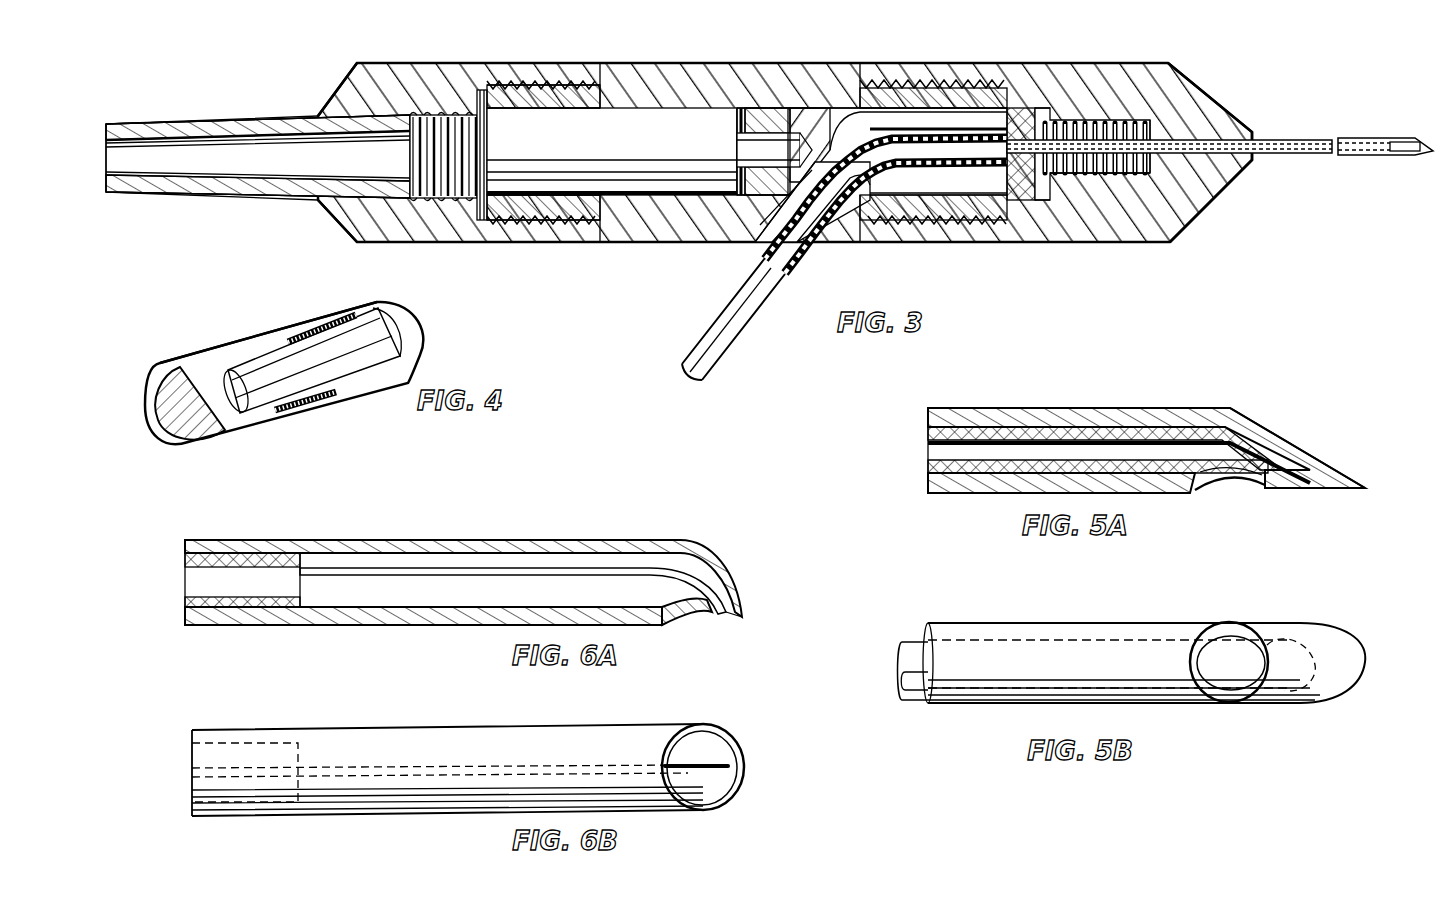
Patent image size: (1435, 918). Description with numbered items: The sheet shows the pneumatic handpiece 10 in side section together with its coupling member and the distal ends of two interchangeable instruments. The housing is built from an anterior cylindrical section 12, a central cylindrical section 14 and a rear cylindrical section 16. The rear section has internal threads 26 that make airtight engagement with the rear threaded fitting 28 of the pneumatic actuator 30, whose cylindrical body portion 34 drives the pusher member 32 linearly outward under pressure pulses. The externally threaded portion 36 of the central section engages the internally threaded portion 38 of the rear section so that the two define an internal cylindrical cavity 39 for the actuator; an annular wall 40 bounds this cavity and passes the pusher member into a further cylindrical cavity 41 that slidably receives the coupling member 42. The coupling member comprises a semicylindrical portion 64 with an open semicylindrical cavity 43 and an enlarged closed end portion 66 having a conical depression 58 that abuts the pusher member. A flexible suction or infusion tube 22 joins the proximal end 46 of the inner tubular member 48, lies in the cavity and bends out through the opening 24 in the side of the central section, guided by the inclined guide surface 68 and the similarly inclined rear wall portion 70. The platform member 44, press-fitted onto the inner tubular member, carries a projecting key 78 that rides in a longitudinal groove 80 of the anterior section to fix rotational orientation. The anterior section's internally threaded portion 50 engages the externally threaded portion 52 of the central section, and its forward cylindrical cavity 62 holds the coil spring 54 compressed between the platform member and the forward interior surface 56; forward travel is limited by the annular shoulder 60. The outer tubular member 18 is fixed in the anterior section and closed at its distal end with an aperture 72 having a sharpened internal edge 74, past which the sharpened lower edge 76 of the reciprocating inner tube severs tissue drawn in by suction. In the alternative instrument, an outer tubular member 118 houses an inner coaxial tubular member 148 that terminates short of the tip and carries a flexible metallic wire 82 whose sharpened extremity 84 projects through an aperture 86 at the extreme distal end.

In FIG. 3, the pneumatic handpiece 10 is at (316, 232).
In FIG. 3, the anterior cylindrical section 12 is at (1210, 192).
In FIG. 3, the central cylindrical section 14 is at (652, 222).
In FIG. 3, the rear cylindrical section 16 is at (340, 80).
In FIG. 3, the outer tubular member 18 is at (1385, 156).
In FIG. 5A, the outer tubular member 18 is at (1110, 412).
In FIG. 5B, the outer tubular member 18 is at (1000, 708).
In FIG. 3, the flexible suction or infusion tube 22 is at (735, 322).
In FIG. 3, the opening 24 is at (810, 258).
In FIG. 3, the internal threads 26 is at (418, 108).
In FIG. 3, the rear threaded fitting 28 is at (455, 113).
In FIG. 3, the pneumatic actuator 30 is at (597, 186).
In FIG. 3, the pusher member 32 is at (745, 152).
In FIG. 3, the cylindrical body portion 34 is at (626, 139).
In FIG. 3, the externally threaded portion 36 is at (555, 85).
In FIG. 3, the internally threaded portion 38 is at (516, 84).
In FIG. 3, the internal cylindrical cavity 39 is at (742, 108).
In FIG. 3, the annular wall 40 is at (772, 108).
In FIG. 3, the cylindrical cavity 41 is at (790, 108).
In FIG. 3, the coupling member 42 is at (960, 98).
In FIG. 4, the coupling member 42 is at (310, 411).
In FIG. 3, the open semicylindrical cavity 43 is at (862, 108).
In FIG. 4, the open semicylindrical cavity 43 is at (370, 357).
In FIG. 3, the platform member 44 is at (1025, 108).
In FIG. 3, the proximal end 46 is at (960, 200).
In FIG. 3, the inner tubular member 48 is at (1356, 138).
In FIG. 5A, the inner tubular member 48 is at (990, 432).
In FIG. 5B, the inner tubular member 48 is at (916, 692).
In FIG. 3, the internally threaded portion 50 is at (928, 84).
In FIG. 3, the externally threaded portion 52 is at (918, 224).
In FIG. 3, the coil spring 54 is at (1120, 135).
In FIG. 3, the forward interior surface 56 is at (1150, 130).
In FIG. 3, the conical depression 58 is at (812, 118).
In FIG. 3, the annular shoulder 60 is at (1058, 112).
In FIG. 3, the forward cylindrical cavity 62 is at (1120, 178).
In FIG. 4, the semicylindrical portion 64 is at (313, 320).
In FIG. 3, the closed end portion 66 is at (790, 198).
In FIG. 4, the closed end portion 66 is at (172, 438).
In FIG. 3, the inclined guide surface 68 is at (832, 235).
In FIG. 4, the inclined guide surface 68 is at (205, 425).
In FIG. 3, the rear wall portion 70 is at (758, 245).
In FIG. 5A, the aperture 72 is at (1242, 487).
In FIG. 5B, the aperture 72 is at (1226, 672).
In FIG. 5A, the sharpened internal edge 74 is at (1216, 473).
In FIG. 5B, the sharpened internal edge 74 is at (1250, 680).
In FIG. 5A, the sharpened lower edge 76 is at (1290, 462).
In FIG. 5B, the sharpened lower edge 76 is at (1290, 705).
In FIG. 3, the projecting key 78 is at (1030, 200).
In FIG. 3, the longitudinal groove 80 is at (1060, 200).
In FIG. 6A, the flexible metallic wire 82 is at (480, 568).
In FIG. 6B, the flexible metallic wire 82 is at (680, 760).
In FIG. 6A, the sharpened extremity 84 is at (726, 614).
In FIG. 6B, the sharpened extremity 84 is at (735, 757).
In FIG. 6A, the aperture 86 is at (690, 613).
In FIG. 6B, the aperture 86 is at (738, 790).
In FIG. 6A, the outer tubular member 118 is at (430, 540).
In FIG. 6B, the outer tubular member 118 is at (365, 730).
In FIG. 6A, the inner coaxial tubular member 148 is at (275, 608).
In FIG. 6B, the inner coaxial tubular member 148 is at (248, 744).